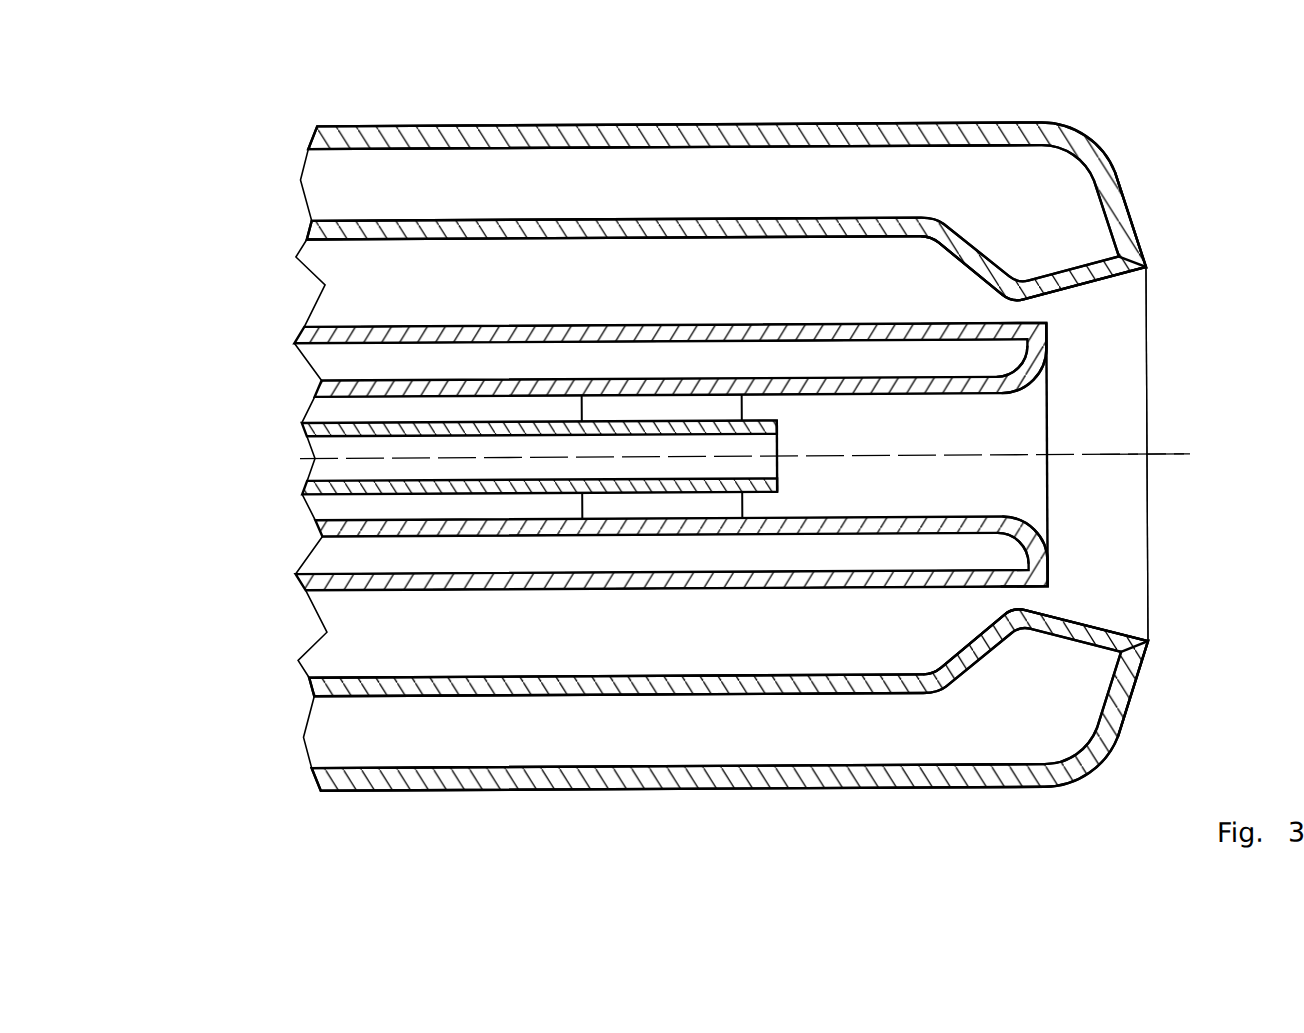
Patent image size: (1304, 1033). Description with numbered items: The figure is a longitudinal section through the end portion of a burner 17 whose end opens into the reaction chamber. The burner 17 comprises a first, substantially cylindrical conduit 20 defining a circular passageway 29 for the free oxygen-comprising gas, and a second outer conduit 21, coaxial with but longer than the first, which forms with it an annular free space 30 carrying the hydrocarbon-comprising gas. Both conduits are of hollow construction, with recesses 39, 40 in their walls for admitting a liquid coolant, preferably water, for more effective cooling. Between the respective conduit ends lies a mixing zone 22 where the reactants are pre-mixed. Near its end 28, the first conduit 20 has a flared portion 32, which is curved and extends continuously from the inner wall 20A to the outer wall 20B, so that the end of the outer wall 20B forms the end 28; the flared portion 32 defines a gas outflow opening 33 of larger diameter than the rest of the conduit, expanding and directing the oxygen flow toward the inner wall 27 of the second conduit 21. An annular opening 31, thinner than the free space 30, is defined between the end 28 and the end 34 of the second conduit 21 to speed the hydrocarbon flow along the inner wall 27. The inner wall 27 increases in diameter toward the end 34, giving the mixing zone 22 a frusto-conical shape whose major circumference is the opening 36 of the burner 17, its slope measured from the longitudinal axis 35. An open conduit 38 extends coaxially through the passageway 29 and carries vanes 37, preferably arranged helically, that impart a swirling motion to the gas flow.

The burner 17 is at (200, 136).
The first conduit 20 is at (347, 391).
The inner wall 20A is at (472, 403).
The outer wall 20B is at (707, 332).
The second conduit 21 is at (335, 228).
The mixing zone 22 is at (1113, 353).
The inner wall 27 is at (1102, 300).
The end 28 is at (1047, 324).
The passageway 29 is at (277, 518).
The annular free space 30 is at (785, 286).
The annular opening 31 is at (1010, 313).
The flared portion 32 is at (1033, 382).
The gas outflow opening 33 is at (1048, 493).
The end 34 is at (1153, 270).
The longitudinal axis 35 is at (1148, 457).
The opening 36 is at (1148, 519).
The vanes 37 is at (638, 410).
The conduit 38 is at (316, 457).
The recess 39 is at (553, 362).
The recess 40 is at (1040, 216).